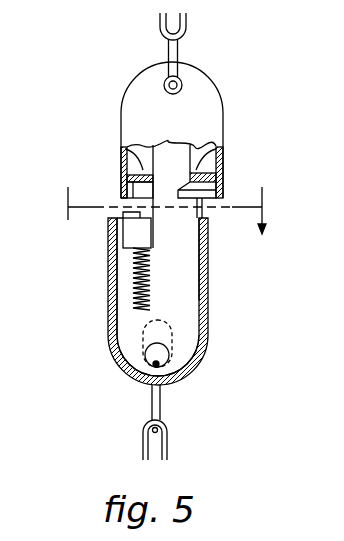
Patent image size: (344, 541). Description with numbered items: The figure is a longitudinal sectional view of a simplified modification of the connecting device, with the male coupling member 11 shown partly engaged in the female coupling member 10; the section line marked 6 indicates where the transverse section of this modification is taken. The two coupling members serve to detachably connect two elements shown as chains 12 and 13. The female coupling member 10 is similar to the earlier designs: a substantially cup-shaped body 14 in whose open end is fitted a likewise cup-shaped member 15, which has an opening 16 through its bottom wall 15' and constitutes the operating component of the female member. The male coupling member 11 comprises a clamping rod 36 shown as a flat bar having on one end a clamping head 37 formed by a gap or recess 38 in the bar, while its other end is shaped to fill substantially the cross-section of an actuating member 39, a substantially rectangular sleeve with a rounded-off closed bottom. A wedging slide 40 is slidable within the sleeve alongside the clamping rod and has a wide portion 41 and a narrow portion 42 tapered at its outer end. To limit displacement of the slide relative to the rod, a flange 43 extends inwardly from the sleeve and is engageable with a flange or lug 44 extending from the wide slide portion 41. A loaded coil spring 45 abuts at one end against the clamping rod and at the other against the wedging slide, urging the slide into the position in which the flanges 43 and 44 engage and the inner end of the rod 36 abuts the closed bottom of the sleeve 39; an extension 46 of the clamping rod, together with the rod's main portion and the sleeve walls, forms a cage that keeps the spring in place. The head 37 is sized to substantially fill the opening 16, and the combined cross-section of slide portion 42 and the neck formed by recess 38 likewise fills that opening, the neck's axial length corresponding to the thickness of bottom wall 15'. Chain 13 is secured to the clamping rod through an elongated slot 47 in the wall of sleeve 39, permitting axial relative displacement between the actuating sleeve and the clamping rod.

The female coupling member 10 is at (233, 80).
The male coupling member 11 is at (232, 274).
The chain 12 is at (189, 23).
The chain 13 is at (137, 440).
The cup-shaped body 14 is at (223, 160).
The cup-shaped member 15 is at (221, 179).
The bottom wall 15' is at (78, 147).
The opening 16 is at (222, 147).
The clamping rod 36 is at (180, 292).
The clamping head 37 is at (171, 151).
The gap or recess 38 is at (210, 204).
The actuating member 39 is at (143, 337).
The wedging slide 40 is at (135, 229).
The wide portion 41 is at (142, 228).
The narrow portion 42 is at (121, 188).
The flange 43 is at (118, 212).
The flange or lug 44 is at (130, 268).
The spring 45 is at (160, 303).
The extension 46 is at (122, 298).
The opening or elongated slot 47 is at (120, 369).
The section line 6- 6 is at (167, 210).